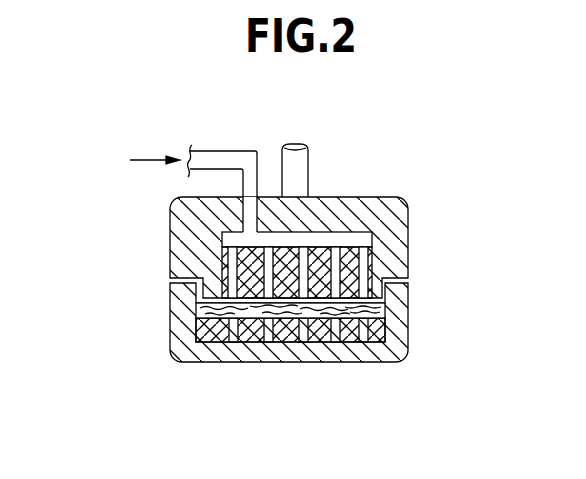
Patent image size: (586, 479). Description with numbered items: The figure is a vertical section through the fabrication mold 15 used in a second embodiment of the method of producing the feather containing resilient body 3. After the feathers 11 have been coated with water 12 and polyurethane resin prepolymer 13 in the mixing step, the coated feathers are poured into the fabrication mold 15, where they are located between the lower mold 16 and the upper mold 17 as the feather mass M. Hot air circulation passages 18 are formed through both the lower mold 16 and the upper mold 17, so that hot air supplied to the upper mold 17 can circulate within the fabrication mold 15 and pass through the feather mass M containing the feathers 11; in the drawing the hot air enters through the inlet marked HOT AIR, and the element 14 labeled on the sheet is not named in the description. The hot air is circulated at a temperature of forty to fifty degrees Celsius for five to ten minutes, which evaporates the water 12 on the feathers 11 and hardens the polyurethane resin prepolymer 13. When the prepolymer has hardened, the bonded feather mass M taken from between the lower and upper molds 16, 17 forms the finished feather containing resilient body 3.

The feather containing resilient body 3 is at (316, 346).
The feathers 11 is at (190, 360).
The water 12 is at (230, 358).
The polyurethane resin prepolymer 13 is at (276, 342).
The hot air inlet pipe 14 is at (144, 188).
The fabrication mold 15 is at (422, 209).
The lower mold 16 is at (400, 331).
The upper mold 17 is at (340, 197).
The hot air circulation passages 18 is at (363, 262).
The feather mass M is at (390, 304).